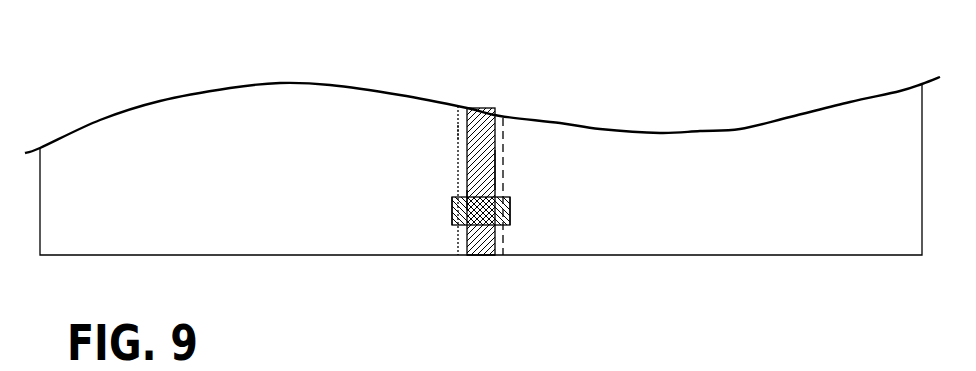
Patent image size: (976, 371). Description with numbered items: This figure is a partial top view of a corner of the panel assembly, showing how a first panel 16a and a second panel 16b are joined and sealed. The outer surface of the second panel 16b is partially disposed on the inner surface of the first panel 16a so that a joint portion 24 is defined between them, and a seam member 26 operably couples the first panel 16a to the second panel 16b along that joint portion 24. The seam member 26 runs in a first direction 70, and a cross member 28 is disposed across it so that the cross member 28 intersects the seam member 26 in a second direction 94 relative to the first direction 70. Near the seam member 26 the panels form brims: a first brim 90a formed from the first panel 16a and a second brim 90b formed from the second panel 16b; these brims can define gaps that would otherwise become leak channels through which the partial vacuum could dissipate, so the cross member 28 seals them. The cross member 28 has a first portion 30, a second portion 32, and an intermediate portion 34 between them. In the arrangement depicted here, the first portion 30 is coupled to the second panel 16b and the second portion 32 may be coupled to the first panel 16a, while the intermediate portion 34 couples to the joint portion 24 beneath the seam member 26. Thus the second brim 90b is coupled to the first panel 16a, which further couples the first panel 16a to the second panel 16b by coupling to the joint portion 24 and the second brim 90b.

The first panel 16a is at (208, 153).
The second panel 16b is at (769, 148).
The joint portion 24 is at (458, 155).
The seam member 26 is at (480, 108).
The cross member 28 is at (462, 225).
The first portion 30 is at (452, 212).
The second portion 32 is at (510, 213).
The intermediate portion 34 is at (487, 258).
The first direction 70 is at (495, 168).
The first brim 90a is at (512, 147).
The second brim 90b is at (458, 132).
The second direction 94 is at (467, 200).